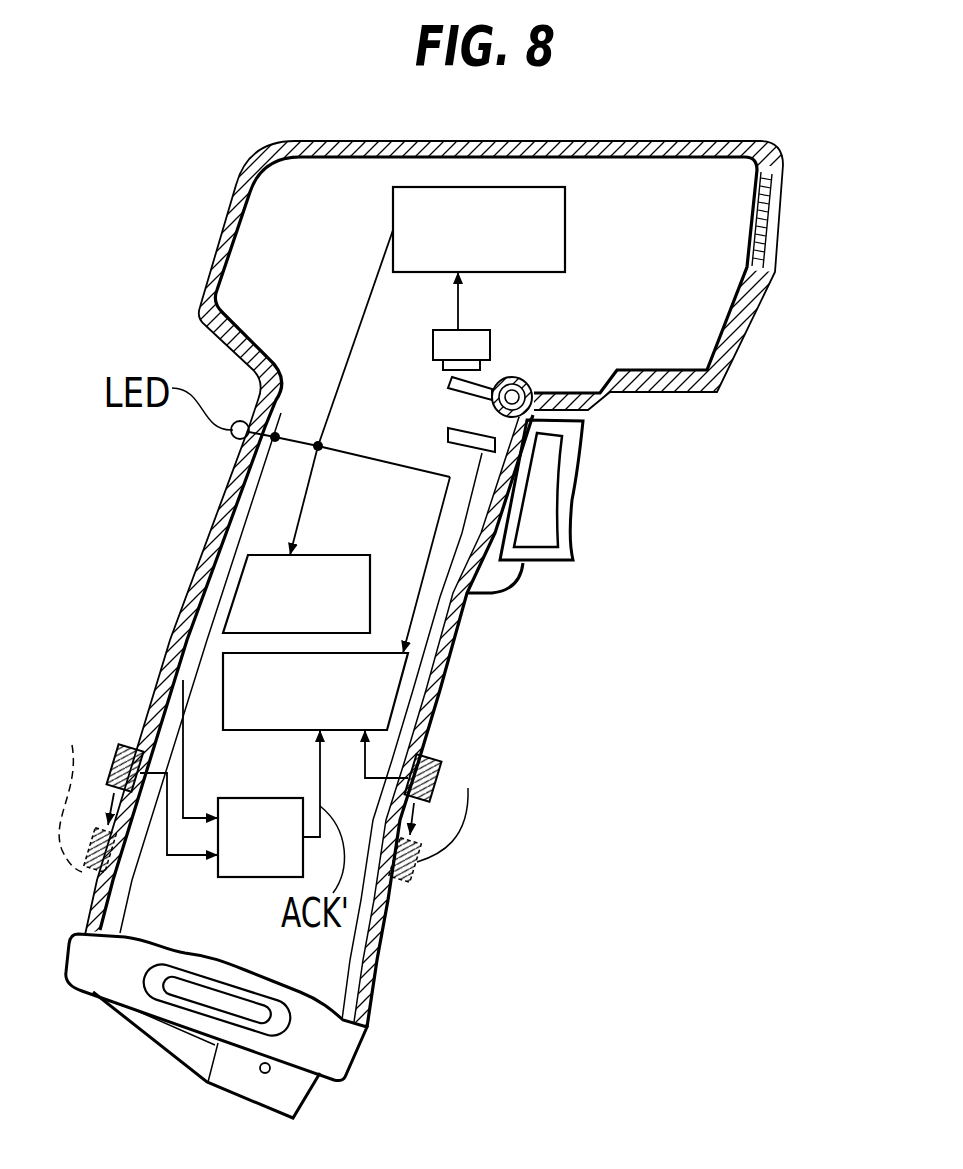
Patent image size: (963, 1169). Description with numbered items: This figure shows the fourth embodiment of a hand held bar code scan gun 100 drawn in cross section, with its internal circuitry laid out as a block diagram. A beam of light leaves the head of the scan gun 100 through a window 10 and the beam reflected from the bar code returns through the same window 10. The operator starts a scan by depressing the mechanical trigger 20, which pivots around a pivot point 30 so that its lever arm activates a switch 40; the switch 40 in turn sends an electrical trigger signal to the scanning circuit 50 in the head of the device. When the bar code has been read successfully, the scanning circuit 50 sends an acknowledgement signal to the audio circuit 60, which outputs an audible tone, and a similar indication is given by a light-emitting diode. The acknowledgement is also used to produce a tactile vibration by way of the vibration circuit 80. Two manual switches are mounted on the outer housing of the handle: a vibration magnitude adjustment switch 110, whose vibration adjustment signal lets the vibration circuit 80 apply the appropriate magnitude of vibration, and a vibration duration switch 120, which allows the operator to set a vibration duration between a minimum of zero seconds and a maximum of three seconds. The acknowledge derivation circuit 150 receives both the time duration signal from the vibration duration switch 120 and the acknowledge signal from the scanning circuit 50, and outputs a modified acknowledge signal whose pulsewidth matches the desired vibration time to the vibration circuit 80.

The window 10 is at (767, 218).
The mechanical trigger 20 is at (573, 485).
The pivot point 30 is at (453, 398).
The switch 40 is at (493, 334).
The scanning circuit 50 is at (393, 215).
The audio circuit 60 is at (233, 602).
The vibration circuit 80 is at (222, 703).
The scan gun 100 is at (652, 703).
The vibration magnitude adjustment switch 110 is at (430, 793).
The vibration duration switch 120 is at (110, 773).
The ACK' derivation circuit 150 is at (260, 878).